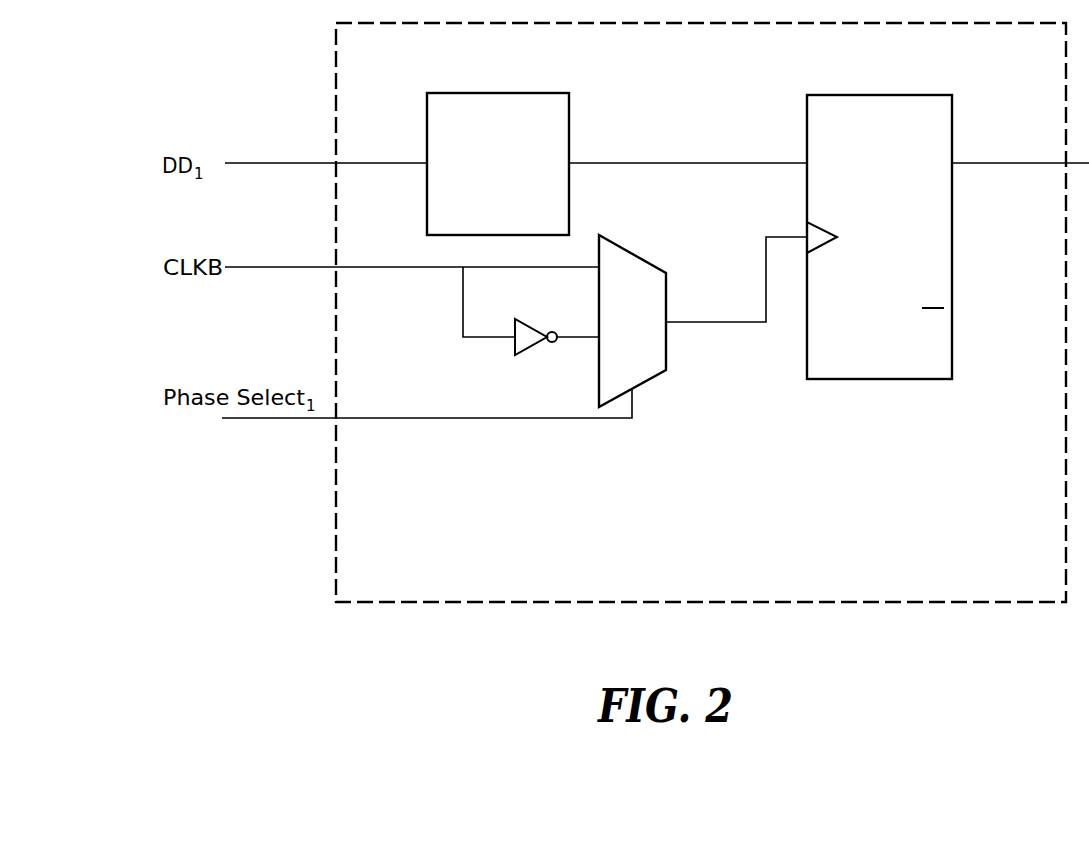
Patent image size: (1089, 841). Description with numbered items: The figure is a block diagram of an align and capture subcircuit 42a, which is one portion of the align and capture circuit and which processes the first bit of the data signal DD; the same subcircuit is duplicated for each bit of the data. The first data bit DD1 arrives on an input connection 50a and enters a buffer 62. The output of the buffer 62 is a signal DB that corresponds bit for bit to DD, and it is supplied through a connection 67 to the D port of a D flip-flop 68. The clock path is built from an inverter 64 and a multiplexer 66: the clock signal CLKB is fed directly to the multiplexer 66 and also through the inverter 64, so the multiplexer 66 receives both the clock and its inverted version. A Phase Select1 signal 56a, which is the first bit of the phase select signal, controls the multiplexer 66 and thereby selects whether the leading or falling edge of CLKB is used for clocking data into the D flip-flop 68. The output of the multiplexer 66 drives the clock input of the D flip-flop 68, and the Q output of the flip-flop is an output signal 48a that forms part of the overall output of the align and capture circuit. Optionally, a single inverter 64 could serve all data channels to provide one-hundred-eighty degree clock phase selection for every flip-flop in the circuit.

The align and capture subcircuit 42a is at (1053, 586).
The DD1 data input connection 50a is at (250, 163).
The buffer 62 is at (485, 199).
The connection 67 is at (683, 163).
The inverter 64 is at (557, 353).
The multiplexer 66 is at (617, 347).
The Phase Select1 signal 56a is at (343, 418).
The D flip-flop 68 is at (865, 252).
The output signal 48a is at (975, 163).